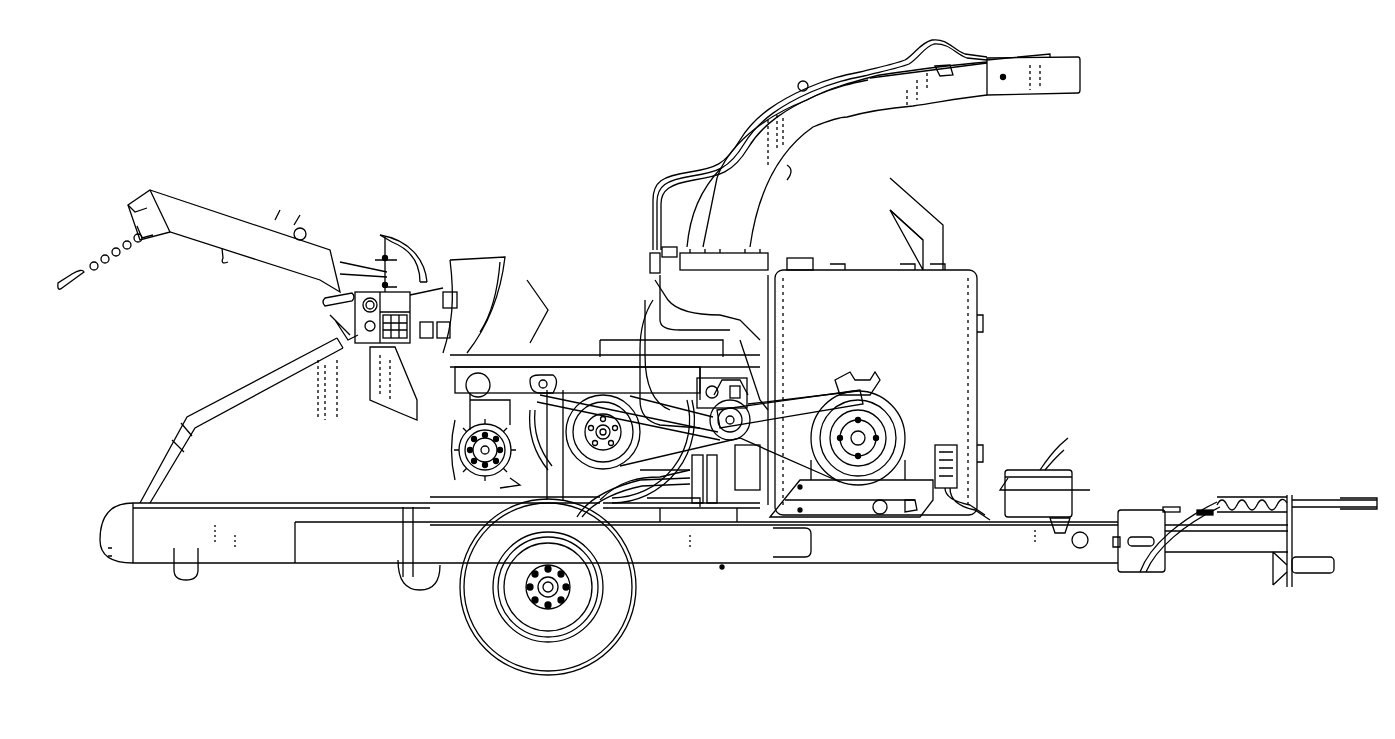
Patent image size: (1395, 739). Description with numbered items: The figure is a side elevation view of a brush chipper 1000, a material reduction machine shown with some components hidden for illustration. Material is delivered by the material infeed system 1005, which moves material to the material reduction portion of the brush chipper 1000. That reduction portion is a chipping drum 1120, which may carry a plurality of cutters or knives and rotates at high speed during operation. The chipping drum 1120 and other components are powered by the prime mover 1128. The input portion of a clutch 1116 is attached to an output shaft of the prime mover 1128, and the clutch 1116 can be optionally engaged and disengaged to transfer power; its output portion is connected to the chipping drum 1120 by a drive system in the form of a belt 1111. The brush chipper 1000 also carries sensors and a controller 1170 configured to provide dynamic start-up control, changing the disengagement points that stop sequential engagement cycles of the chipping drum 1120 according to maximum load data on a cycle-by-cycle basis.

The brush chipper 1000 is at (492, 158).
The material infeed system 1005 is at (452, 462).
The belt 1111 is at (813, 482).
The clutch 1116 is at (900, 415).
The chipping drum 1120 is at (663, 497).
The prime mover 1128 is at (940, 303).
The controller 1170 is at (373, 292).